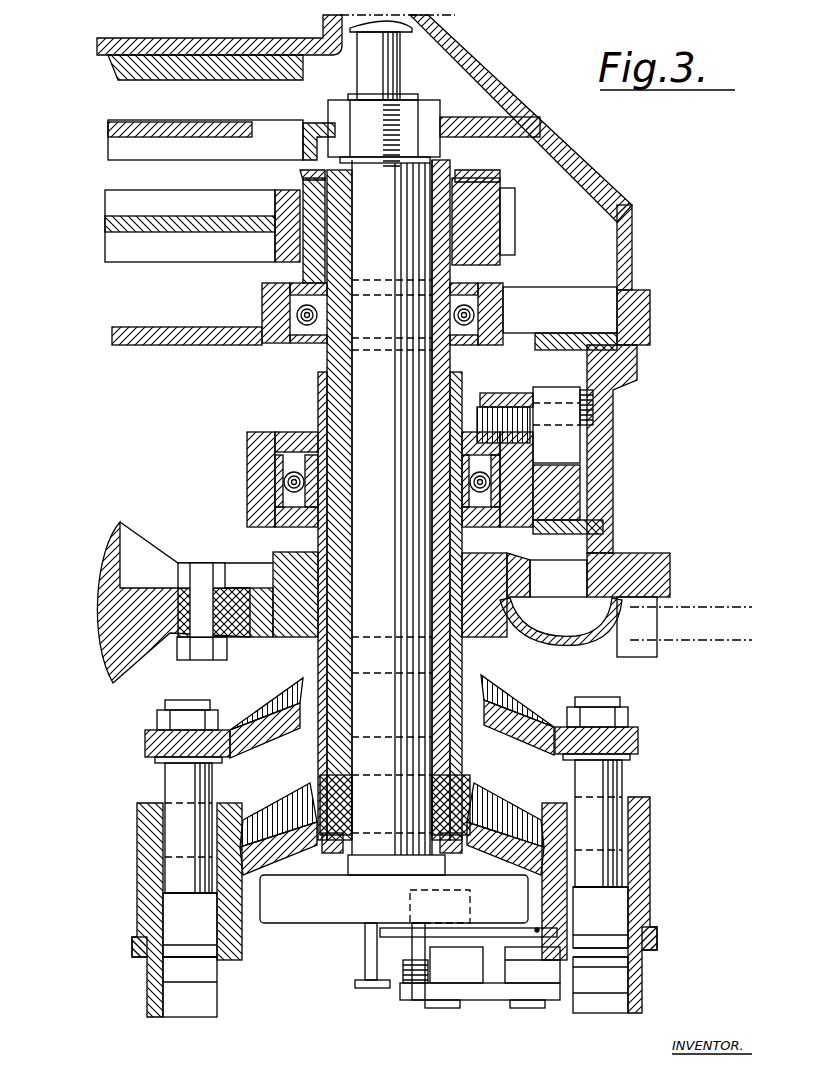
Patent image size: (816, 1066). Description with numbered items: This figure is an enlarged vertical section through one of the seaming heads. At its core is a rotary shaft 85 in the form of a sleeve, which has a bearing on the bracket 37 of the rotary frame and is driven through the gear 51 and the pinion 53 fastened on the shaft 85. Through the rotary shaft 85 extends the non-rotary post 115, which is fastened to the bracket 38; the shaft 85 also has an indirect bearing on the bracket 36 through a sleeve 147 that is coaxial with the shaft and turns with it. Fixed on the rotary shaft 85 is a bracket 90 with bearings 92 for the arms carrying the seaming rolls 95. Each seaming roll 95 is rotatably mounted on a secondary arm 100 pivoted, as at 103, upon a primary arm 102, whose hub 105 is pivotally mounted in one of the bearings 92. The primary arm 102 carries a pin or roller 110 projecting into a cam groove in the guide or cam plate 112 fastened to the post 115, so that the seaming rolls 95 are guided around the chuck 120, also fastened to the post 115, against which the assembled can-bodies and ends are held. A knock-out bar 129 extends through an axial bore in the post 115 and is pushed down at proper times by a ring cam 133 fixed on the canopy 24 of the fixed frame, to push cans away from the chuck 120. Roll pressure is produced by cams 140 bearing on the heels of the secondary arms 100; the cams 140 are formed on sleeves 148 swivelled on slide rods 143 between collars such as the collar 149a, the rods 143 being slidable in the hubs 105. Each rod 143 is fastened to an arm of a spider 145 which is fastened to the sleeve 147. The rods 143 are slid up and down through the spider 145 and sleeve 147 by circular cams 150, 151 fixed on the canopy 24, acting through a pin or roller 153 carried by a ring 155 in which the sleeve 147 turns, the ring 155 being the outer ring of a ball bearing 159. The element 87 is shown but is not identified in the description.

The ring cam 133 is at (450, 23).
The knock-out bar 129 is at (398, 66).
The bracket 38 is at (110, 153).
The gear 51 is at (100, 226).
The pinion 53 is at (476, 210).
The bracket 37 is at (112, 331).
The upper ball bearing 87 is at (297, 311).
The rotary shaft 85 is at (327, 355).
The ball bearing 159 is at (228, 483).
The canopy 24 is at (648, 293).
The circular cam 151 is at (650, 340).
The pin or roller 153 is at (581, 420).
The circular cam 150 is at (570, 483).
The ring 155 is at (523, 488).
The bracket 36 is at (270, 578).
The non-rotary post 115 is at (432, 550).
The sleeve 147 is at (482, 650).
The spider 145 is at (260, 725).
The slide rod 143 is at (175, 779).
The bracket 90 is at (317, 793).
The bearing 92 is at (137, 857).
The collar 149a is at (678, 837).
The hub 105 is at (132, 947).
The sleeve 148 is at (178, 940).
The cam 140 is at (185, 973).
The guide or cam plate 112 is at (307, 912).
The pin or roller 110 is at (403, 906).
The chuck 120 is at (360, 988).
The primary arm 102 is at (490, 940).
The pivot 103 is at (536, 928).
The seaming roll 95 is at (453, 970).
The secondary arm 100 is at (538, 990).